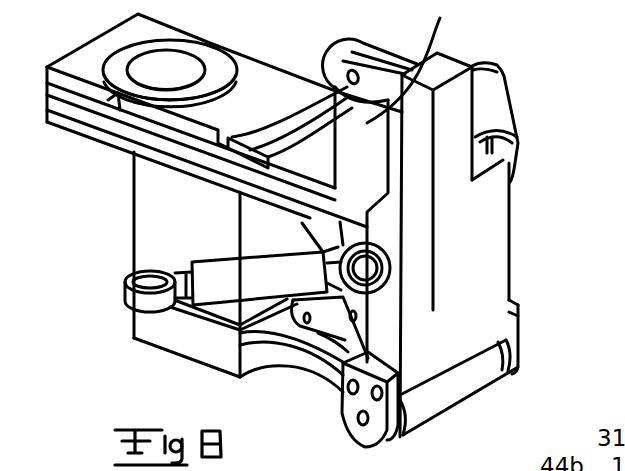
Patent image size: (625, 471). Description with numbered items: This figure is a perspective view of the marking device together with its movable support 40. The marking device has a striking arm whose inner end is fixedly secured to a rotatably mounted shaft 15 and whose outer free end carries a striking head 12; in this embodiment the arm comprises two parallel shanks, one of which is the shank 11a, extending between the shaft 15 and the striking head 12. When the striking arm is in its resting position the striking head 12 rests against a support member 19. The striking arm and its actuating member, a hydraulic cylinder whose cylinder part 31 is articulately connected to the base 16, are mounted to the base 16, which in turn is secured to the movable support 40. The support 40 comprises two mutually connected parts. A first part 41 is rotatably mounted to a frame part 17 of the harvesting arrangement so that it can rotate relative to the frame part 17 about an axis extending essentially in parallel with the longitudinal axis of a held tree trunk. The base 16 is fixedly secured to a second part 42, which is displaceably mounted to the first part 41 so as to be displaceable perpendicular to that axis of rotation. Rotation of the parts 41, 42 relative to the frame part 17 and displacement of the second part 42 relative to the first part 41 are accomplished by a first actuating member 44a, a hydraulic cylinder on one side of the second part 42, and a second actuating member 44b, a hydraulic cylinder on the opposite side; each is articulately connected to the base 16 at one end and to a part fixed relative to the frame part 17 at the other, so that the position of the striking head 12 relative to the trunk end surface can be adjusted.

The frame part 17 is at (152, 33).
The movable support 40 is at (265, 44).
The first part 41 is at (272, 90).
The cylinder part 31 is at (400, 44).
The second actuating member 44b is at (497, 105).
The second part 42 is at (99, 130).
The support member 19 is at (143, 220).
The first actuating member 44a is at (222, 270).
The base 16 is at (508, 245).
The striking head 12 is at (212, 353).
The shank 11a is at (297, 358).
The shaft 15 is at (460, 390).